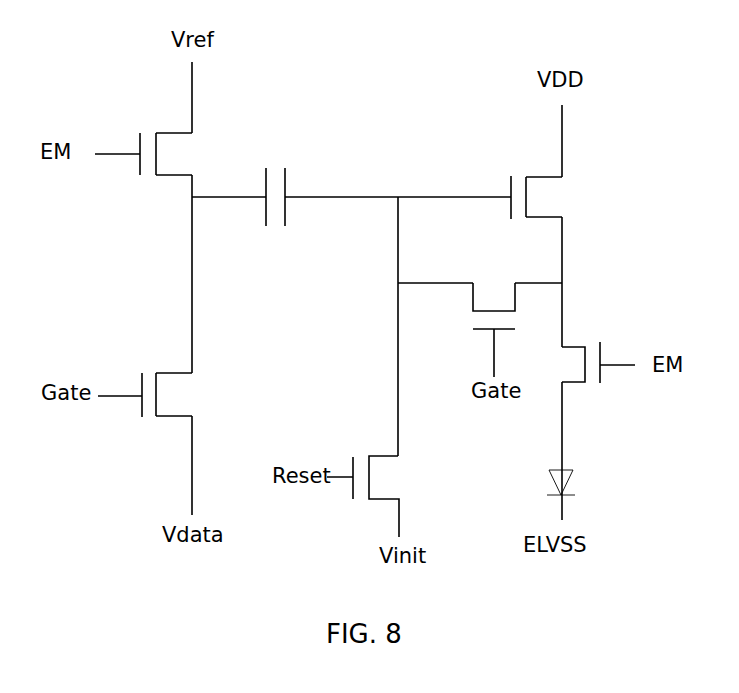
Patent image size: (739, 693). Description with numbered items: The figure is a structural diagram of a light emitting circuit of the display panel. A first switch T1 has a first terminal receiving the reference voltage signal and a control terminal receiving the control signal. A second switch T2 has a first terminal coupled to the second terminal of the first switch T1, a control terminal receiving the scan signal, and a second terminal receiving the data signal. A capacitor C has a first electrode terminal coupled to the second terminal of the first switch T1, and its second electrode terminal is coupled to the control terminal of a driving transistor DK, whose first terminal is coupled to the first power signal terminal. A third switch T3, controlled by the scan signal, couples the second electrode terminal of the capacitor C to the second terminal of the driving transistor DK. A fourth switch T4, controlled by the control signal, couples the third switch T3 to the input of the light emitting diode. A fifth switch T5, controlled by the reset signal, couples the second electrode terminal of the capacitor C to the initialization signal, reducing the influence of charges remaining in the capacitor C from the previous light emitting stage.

The first switch T1 is at (143, 173).
The second switch T2 is at (145, 414).
The third switch T3 is at (474, 330).
The fourth switch T4 is at (598, 346).
The fifth switch T5 is at (380, 496).
The driving transistor DK is at (559, 197).
The capacitor C is at (275, 179).